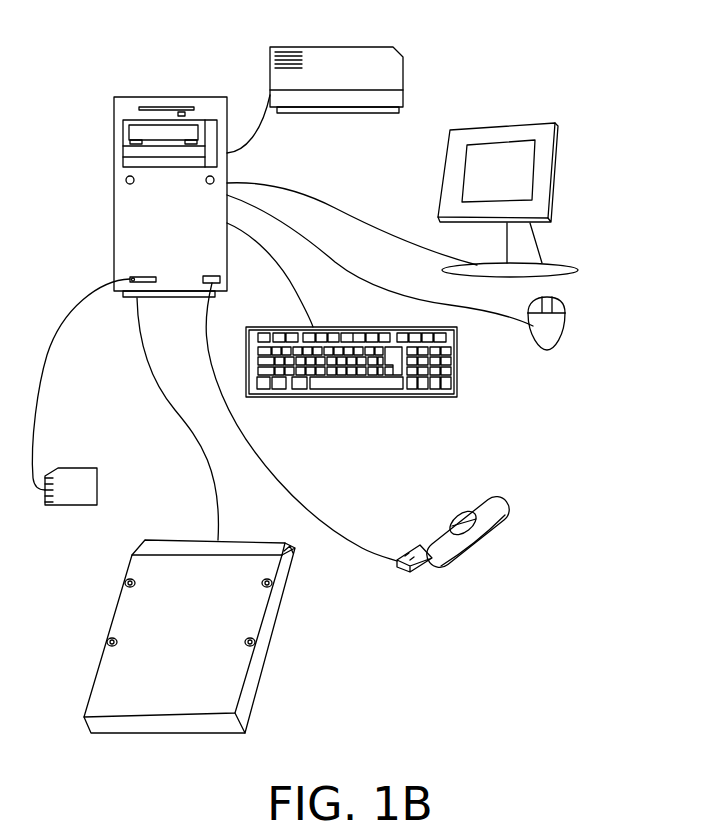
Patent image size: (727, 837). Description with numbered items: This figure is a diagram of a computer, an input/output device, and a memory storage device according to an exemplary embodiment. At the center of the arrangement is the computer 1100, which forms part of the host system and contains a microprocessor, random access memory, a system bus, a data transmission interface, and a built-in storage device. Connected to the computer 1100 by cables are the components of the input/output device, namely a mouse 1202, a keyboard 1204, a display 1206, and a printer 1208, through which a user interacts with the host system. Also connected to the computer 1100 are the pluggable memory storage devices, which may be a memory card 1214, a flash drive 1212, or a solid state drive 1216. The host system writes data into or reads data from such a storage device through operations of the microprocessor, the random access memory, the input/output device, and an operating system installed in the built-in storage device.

The computer 1100 is at (172, 97).
The mouse 1202 is at (565, 327).
The keyboard 1204 is at (457, 373).
The display 1206 is at (508, 123).
The printer 1208 is at (333, 47).
The flash drive 1212 is at (453, 519).
The memory card 1214 is at (97, 477).
The solid state drive 1216 is at (246, 520).